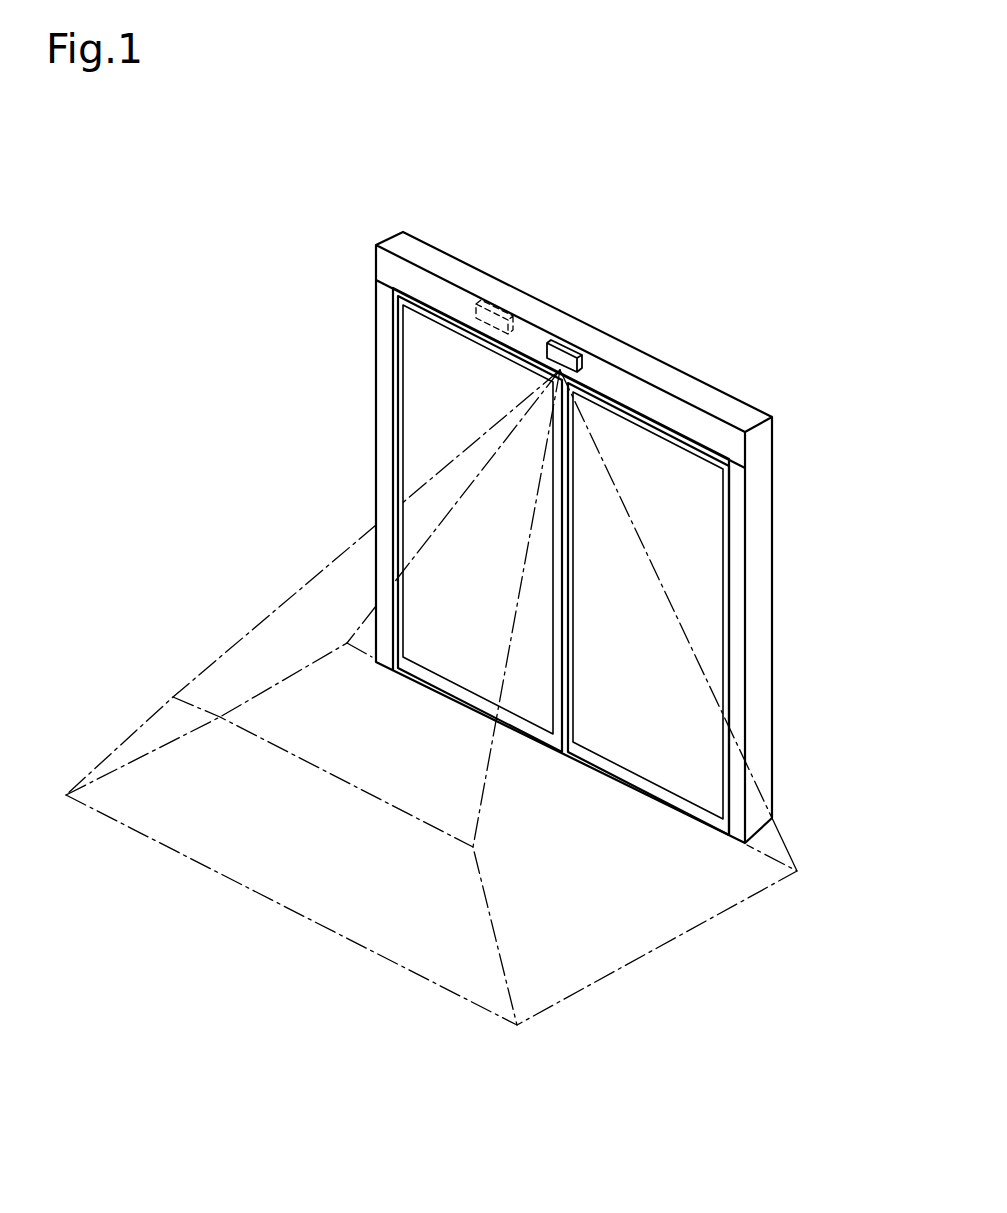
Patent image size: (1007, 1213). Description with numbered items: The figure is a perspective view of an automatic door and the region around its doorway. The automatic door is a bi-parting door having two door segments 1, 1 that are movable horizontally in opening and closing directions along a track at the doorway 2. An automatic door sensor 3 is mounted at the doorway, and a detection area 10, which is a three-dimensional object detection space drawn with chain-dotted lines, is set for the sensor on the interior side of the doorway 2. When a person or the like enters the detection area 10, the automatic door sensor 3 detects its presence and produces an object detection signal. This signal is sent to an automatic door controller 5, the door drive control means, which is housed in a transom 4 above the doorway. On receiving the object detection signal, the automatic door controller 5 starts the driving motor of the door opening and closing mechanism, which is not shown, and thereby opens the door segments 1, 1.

The door segment 1 is at (427, 372).
The doorway 2 is at (630, 455).
The automatic door sensor 3 is at (570, 340).
The transom 4 is at (703, 422).
The automatic door controller 5 is at (492, 312).
The detection area 10 is at (320, 565).